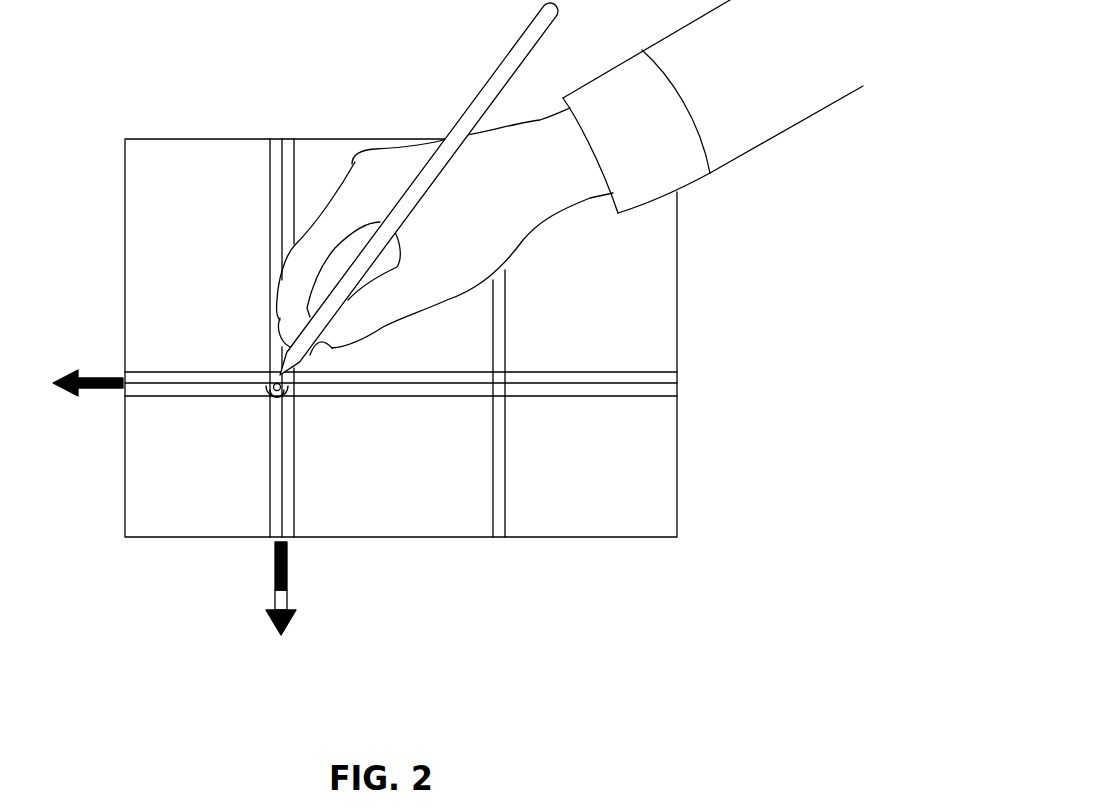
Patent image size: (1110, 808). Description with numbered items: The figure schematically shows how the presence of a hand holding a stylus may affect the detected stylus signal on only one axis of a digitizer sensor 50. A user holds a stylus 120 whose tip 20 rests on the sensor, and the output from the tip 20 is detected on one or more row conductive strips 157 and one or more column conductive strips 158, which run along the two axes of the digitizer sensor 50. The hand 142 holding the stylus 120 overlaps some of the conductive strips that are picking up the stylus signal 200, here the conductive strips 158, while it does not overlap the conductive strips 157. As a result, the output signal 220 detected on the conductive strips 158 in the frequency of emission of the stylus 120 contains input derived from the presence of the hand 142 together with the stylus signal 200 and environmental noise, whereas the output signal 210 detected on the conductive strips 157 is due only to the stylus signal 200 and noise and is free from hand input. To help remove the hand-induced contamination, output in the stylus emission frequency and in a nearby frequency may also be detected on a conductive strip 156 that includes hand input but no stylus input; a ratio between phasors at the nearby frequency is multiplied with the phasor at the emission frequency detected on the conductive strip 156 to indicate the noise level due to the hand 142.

The digitizer sensor 50 is at (677, 470).
The column conductive strips 158 is at (293, 218).
The conductive strip(s) 156 is at (505, 477).
The row conductive strips 157 is at (220, 372).
The hand 142 is at (343, 227).
The stylus 120 is at (471, 117).
The tip 20 is at (278, 372).
The stylus signal 200 is at (275, 398).
The output signal 210 is at (105, 374).
The output signal 220 is at (287, 577).